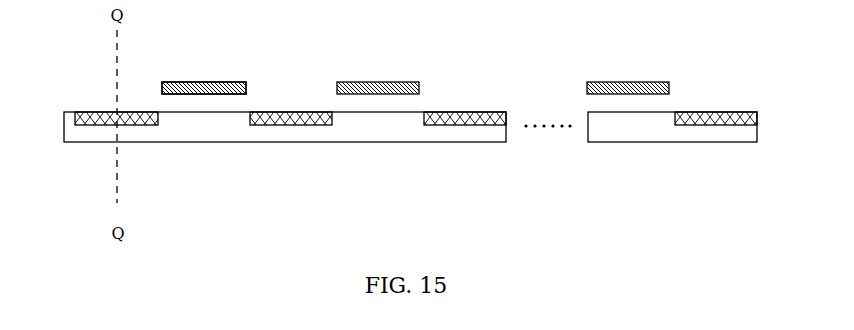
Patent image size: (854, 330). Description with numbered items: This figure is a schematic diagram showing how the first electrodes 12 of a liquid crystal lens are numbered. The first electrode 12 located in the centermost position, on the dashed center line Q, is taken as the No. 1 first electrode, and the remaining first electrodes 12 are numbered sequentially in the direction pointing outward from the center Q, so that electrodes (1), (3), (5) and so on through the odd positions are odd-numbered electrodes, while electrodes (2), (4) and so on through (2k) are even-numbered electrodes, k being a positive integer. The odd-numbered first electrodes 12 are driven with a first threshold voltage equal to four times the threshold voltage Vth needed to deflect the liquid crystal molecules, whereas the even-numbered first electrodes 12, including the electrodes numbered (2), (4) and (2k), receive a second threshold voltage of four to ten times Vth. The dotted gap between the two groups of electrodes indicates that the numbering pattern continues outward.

The first electrode 12 is at (203, 94).
The No. 1 first electrode 1 is at (112, 101).
The even-numbered first electrode 2 is at (204, 67).
The odd-numbered first electrode 3 is at (291, 101).
The even-numbered first electrode 4 is at (378, 67).
The odd-numbered first electrode 5 is at (465, 101).
The even-numbered first electrode 2k is at (628, 67).